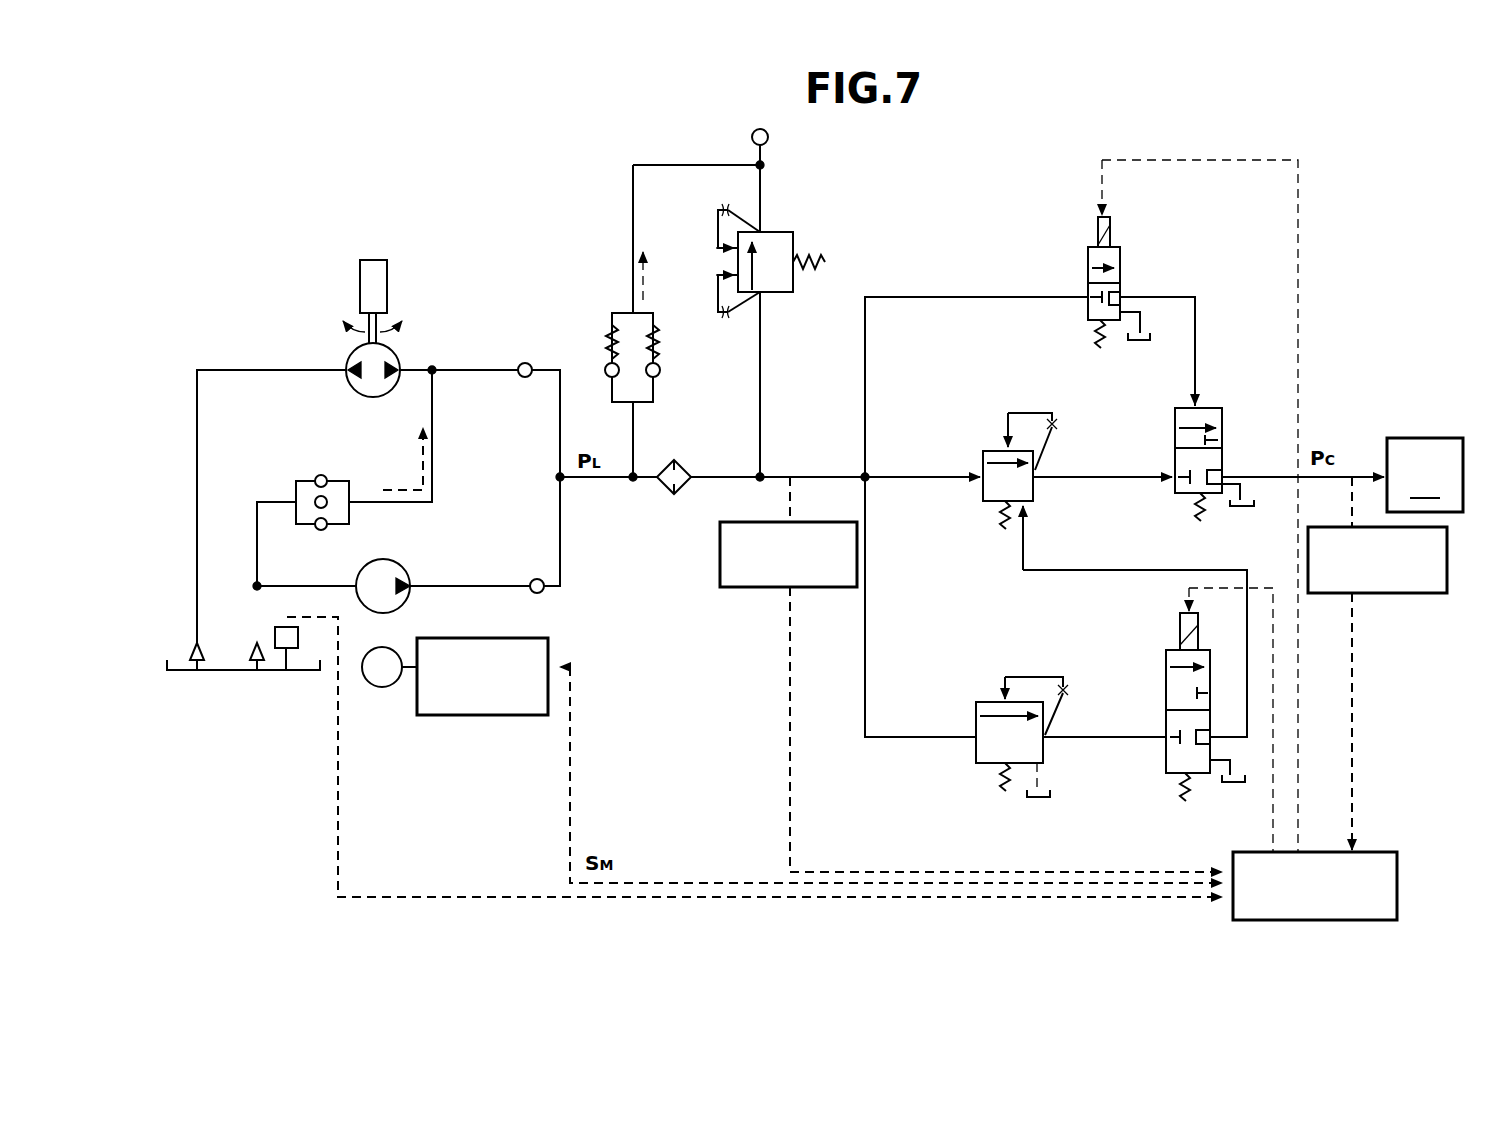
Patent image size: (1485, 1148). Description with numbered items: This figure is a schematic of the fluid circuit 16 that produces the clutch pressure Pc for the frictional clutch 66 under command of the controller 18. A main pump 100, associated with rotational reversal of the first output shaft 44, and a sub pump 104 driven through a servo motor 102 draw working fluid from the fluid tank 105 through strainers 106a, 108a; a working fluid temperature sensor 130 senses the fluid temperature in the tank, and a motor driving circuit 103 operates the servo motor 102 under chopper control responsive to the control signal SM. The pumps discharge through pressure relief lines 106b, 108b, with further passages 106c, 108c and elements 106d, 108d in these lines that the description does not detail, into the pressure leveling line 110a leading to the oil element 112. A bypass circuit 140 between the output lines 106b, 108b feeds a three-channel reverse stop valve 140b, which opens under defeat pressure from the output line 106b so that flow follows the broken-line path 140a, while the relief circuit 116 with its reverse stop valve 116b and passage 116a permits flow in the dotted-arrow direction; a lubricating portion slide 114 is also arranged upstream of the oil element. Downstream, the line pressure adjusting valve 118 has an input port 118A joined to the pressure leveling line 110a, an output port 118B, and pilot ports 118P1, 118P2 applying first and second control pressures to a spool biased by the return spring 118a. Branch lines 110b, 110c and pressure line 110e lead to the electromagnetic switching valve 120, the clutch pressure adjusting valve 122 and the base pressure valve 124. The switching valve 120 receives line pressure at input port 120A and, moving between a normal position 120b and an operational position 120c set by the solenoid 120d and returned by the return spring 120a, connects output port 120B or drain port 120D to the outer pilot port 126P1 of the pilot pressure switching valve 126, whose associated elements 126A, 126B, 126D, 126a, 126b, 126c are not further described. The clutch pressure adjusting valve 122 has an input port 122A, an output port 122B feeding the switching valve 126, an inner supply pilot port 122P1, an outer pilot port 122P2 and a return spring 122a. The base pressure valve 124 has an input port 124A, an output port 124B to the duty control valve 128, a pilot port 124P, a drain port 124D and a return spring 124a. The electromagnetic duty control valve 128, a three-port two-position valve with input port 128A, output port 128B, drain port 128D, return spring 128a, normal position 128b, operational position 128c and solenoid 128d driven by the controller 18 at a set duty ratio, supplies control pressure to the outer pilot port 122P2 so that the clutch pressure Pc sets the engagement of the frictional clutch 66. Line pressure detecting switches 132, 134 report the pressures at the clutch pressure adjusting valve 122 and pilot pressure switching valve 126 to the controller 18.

The fluid circuit 16 is at (530, 188).
The controller 18 is at (1372, 850).
The first output shaft 44 is at (360, 280).
The frictional clutch 66 is at (1425, 475).
The main pump 100 is at (395, 343).
The servo motor 102 is at (382, 688).
The motor driving circuit 103 is at (480, 716).
The sub pump 104 is at (403, 568).
The fluid tank 105 is at (270, 672).
The strainer 106a is at (197, 672).
The pressure relief line 106b is at (468, 368).
The passage 106c is at (195, 385).
The check valve 106d is at (532, 364).
The strainer 108a is at (257, 672).
The pressure relief line 108b is at (438, 588).
The passage 108c is at (302, 584).
The check valve 108d is at (545, 590).
The pressure leveling line 110a is at (562, 490).
The branch line 110b is at (940, 296).
The branch line 110c is at (865, 470).
The pressure line 110e is at (875, 735).
The oil element 112 is at (682, 496).
The lubricating portion slide 114 is at (767, 140).
The relief circuit 116 is at (612, 310).
The relief passage 116a is at (630, 243).
The reverse stop valve 116b is at (660, 370).
The line pressure adjusting valve 118 is at (822, 245).
The input port 118A is at (761, 293).
The output port 118B is at (762, 231).
The return spring 118a is at (828, 262).
The pilot port 118P1 is at (736, 278).
The pilot port 118P2 is at (736, 252).
The electromagnetic switching valve 120 is at (1078, 200).
The input port 120A is at (1088, 295).
The output port 120B is at (1122, 293).
The drain port 120D is at (1122, 328).
The return spring 120a is at (1100, 335).
The normal position 120b is at (1090, 312).
The operational position 120c is at (1088, 265).
The solenoid 120d is at (1108, 240).
The clutch pressure adjusting valve 122 is at (975, 395).
The input port 122A is at (980, 465).
The output port 122B is at (1035, 475).
The inner supply pilot port 122P1 is at (1012, 448).
The outer pilot port 122P2 is at (1030, 505).
The return spring 122a is at (1000, 520).
The base pressure valve 124 is at (978, 688).
The input port 124A is at (974, 735).
The output port 124B is at (1045, 740).
The drain port 124D is at (1045, 768).
The pilot port 124P is at (1002, 698).
The return spring 124a is at (1000, 778).
The pilot pressure switching valve 126 is at (1207, 395).
The valve position 126A is at (1175, 472).
The valve position 126B is at (1215, 470).
The drain port 126D is at (1226, 495).
The outer pilot port 126P1 is at (1190, 402).
The spring 126a is at (1202, 522).
The port 126b is at (1178, 485).
The port 126c is at (1175, 420).
The electromagnetic duty control valve 128 is at (1155, 655).
The input port 128A is at (1166, 735).
The output port 128B is at (1250, 726).
The drain port 128D is at (1214, 778).
The return spring 128a is at (1190, 805).
The normal position 128b is at (1172, 755).
The operational position 128c is at (1166, 685).
The solenoid 128d is at (1182, 642).
The working fluid temperature sensor 130 is at (298, 645).
The line pressure detecting switch 132 is at (768, 588).
The line pressure detecting switch 134 is at (1385, 596).
The bypass circuit 140 is at (275, 478).
The pilot line 140a is at (438, 455).
The reverse stop valve 140b is at (327, 478).